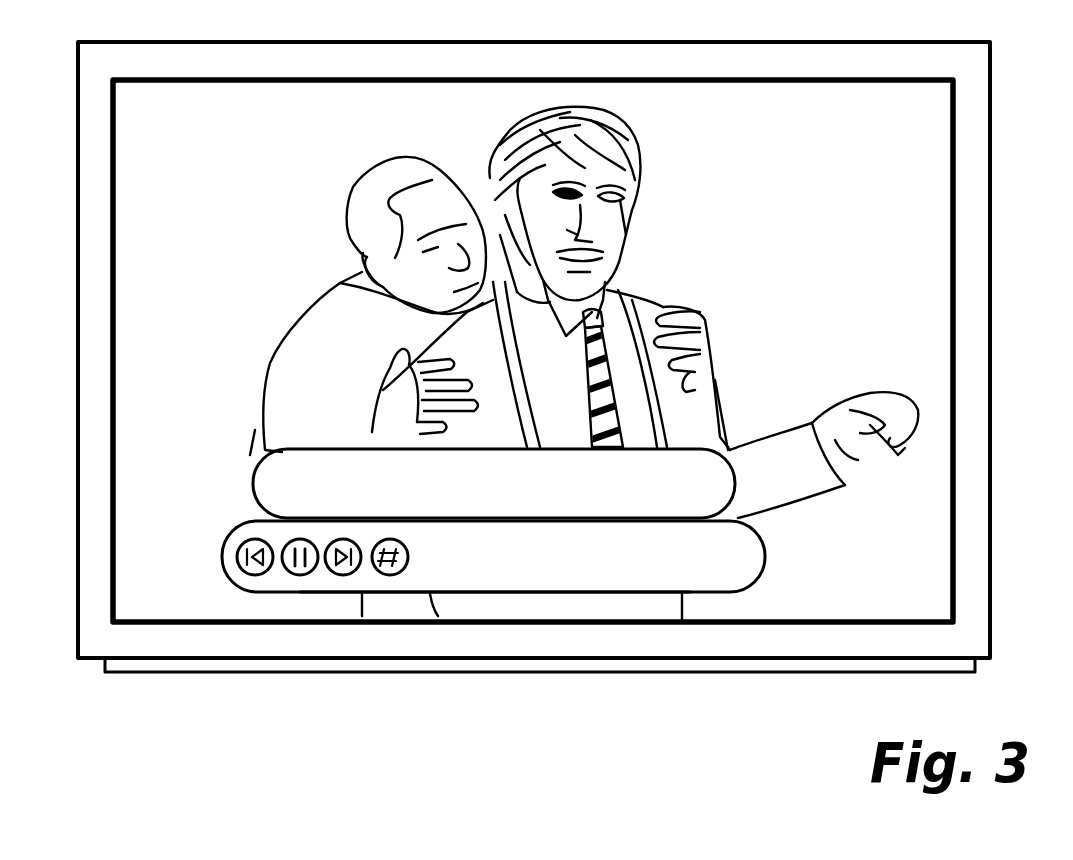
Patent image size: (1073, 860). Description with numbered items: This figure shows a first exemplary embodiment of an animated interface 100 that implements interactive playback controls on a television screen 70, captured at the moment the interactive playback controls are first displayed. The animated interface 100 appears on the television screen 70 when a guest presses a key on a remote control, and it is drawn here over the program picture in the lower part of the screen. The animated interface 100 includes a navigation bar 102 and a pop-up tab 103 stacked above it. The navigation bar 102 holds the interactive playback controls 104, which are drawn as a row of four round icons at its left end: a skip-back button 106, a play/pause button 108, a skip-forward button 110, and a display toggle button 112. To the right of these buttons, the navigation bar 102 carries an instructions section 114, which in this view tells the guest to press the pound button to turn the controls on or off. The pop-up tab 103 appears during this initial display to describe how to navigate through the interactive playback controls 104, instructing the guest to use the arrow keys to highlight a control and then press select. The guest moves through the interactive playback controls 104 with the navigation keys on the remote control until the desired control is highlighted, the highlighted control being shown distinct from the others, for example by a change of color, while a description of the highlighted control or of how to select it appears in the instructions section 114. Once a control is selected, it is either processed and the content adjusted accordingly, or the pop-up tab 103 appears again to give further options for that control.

The television screen 70 is at (945, 442).
The animated interface 100 is at (213, 602).
The navigation bar 102 is at (745, 556).
The pop-up tab 103 is at (716, 492).
The interactive playback controls 104 is at (338, 555).
The skip-back button 106 is at (255, 576).
The play/pause button 108 is at (300, 576).
The skip-forward button 110 is at (343, 576).
The display toggle button 112 is at (392, 576).
The instructions section 114 is at (618, 585).